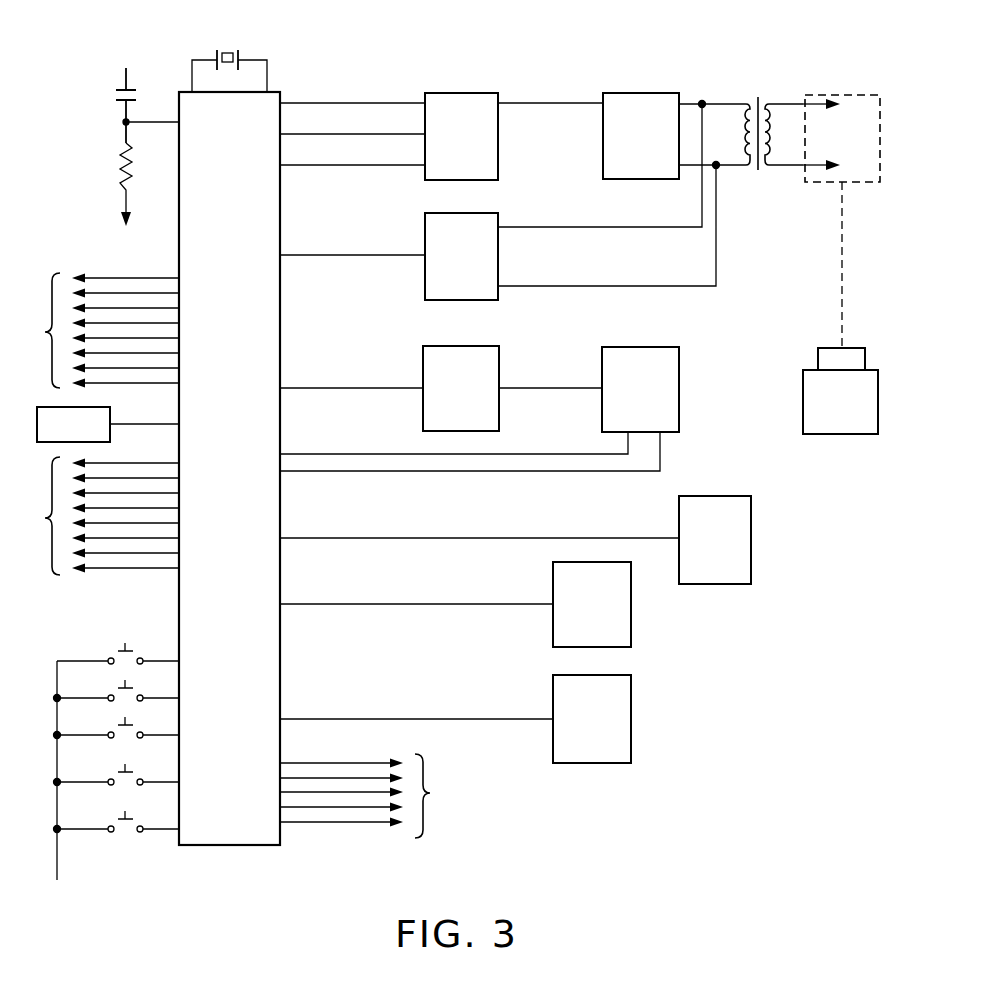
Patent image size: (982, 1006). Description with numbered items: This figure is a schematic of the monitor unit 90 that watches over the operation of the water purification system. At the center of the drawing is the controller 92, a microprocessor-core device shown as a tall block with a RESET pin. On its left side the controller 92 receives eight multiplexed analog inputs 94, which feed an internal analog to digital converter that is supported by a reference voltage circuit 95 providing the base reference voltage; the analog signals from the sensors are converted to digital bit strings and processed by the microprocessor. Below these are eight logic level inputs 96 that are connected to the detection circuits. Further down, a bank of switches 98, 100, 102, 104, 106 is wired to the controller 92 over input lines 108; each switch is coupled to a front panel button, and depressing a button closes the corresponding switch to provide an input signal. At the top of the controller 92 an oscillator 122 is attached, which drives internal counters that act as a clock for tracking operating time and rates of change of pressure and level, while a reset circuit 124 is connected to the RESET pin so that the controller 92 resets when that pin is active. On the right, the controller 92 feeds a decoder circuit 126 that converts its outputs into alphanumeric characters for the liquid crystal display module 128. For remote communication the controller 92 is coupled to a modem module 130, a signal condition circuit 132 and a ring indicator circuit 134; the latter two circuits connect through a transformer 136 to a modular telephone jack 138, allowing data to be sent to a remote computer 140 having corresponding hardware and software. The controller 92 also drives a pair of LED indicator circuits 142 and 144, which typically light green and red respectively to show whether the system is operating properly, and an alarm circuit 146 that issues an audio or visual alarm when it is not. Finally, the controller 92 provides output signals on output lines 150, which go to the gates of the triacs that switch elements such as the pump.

The monitor unit 90 is at (373, 222).
The controller 92 is at (247, 457).
The multiplexed analog inputs 94 is at (96, 330).
The reference voltage circuit 95 is at (90, 436).
The logic level inputs 96 is at (96, 516).
The switch 98 is at (109, 655).
The switch 100 is at (110, 694).
The switch 102 is at (110, 731).
The switch 104 is at (110, 778).
The switch 106 is at (110, 825).
The input lines 108 is at (165, 658).
The oscillator 122 is at (228, 52).
The reset circuit 124 is at (102, 133).
The decoder circuit 126 is at (482, 399).
The liquid crystal display module 128 is at (662, 399).
The modem module 130 is at (482, 147).
The signal condition circuit 132 is at (662, 147).
The ring indicator circuit 134 is at (482, 267).
The transformer 136 is at (760, 97).
The RJ-11 telephone jack 138 is at (864, 149).
The computer 140 is at (862, 412).
The LED indicator circuit 142 is at (613, 615).
The LED indicator circuit 144 is at (613, 729).
The alarm circuit 146 is at (736, 550).
The output lines 150 is at (377, 796).